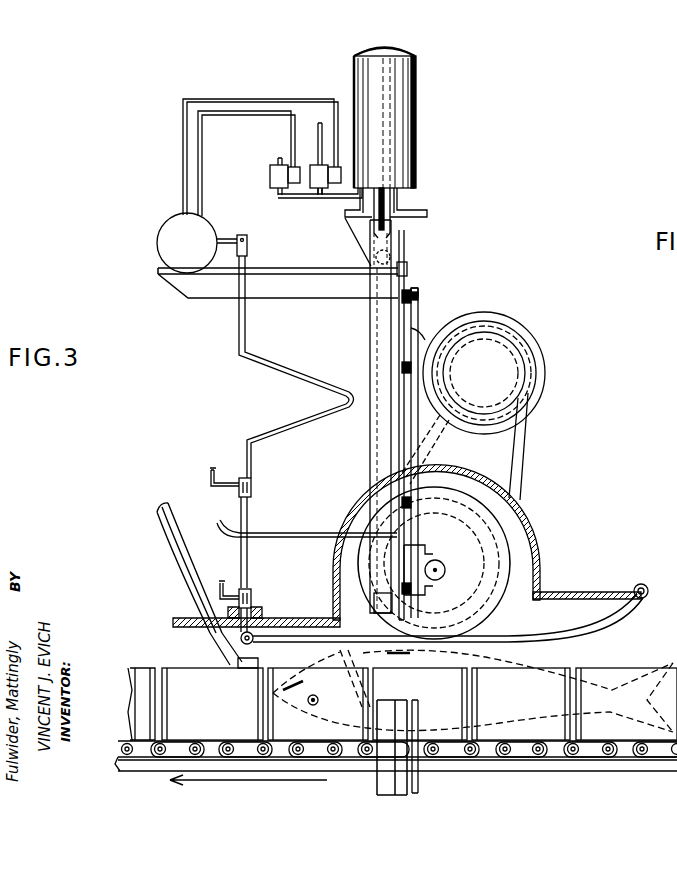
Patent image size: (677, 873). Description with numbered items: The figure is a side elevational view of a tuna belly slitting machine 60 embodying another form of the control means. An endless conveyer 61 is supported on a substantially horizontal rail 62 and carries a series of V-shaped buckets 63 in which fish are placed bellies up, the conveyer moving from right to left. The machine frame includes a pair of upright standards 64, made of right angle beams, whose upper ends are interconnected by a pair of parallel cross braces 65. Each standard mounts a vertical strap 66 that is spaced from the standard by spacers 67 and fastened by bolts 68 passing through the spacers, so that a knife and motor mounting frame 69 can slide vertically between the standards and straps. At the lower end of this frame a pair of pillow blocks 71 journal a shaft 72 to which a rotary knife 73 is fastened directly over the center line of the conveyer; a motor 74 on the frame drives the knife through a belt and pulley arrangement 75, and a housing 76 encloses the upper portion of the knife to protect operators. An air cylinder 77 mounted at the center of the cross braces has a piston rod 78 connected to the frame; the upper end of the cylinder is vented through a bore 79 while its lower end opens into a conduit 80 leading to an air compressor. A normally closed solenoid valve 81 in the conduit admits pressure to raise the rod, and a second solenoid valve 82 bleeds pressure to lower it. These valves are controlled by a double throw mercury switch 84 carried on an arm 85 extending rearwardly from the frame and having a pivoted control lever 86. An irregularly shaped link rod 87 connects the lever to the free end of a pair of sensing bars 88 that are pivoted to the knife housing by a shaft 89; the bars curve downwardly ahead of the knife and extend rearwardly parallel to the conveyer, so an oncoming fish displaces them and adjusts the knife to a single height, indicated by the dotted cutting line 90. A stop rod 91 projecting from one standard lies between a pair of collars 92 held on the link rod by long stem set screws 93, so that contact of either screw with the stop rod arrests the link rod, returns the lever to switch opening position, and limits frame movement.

The tuna belly slitting machine 60 is at (527, 493).
The endless conveyer 61 is at (591, 740).
The rail 62 is at (586, 760).
The buckets 63 is at (177, 672).
The upright standards 64 is at (378, 777).
The cross braces 65 is at (347, 218).
The strap 66 is at (415, 760).
The spacers 67 is at (393, 307).
The bolts 68 is at (420, 298).
The knife and motor mounting frame 69 is at (405, 272).
The pillow blocks 71 is at (440, 563).
The shaft 72 is at (446, 576).
The rotary knife 73 is at (516, 557).
The motor 74 is at (478, 373).
The belt and pulley arrangement 75 is at (519, 447).
The housing 76 is at (537, 525).
The air cylinder 77 is at (415, 108).
The piston rod 78 is at (396, 232).
The bore 79 is at (408, 52).
The conduit 80 is at (346, 200).
The solenoid valve 81 is at (272, 176).
The solenoid valve 82 is at (318, 177).
The double throw mercury switch 84 is at (187, 243).
The arm 85 is at (186, 287).
The control lever 86 is at (228, 236).
The link rod 87 is at (240, 323).
The sensing bars 88 is at (612, 609).
The shaft 89 is at (648, 589).
The cutting line 90 is at (385, 655).
The stop rod 91 is at (287, 536).
The collars 92 is at (251, 595).
The set screws 93 is at (223, 585).